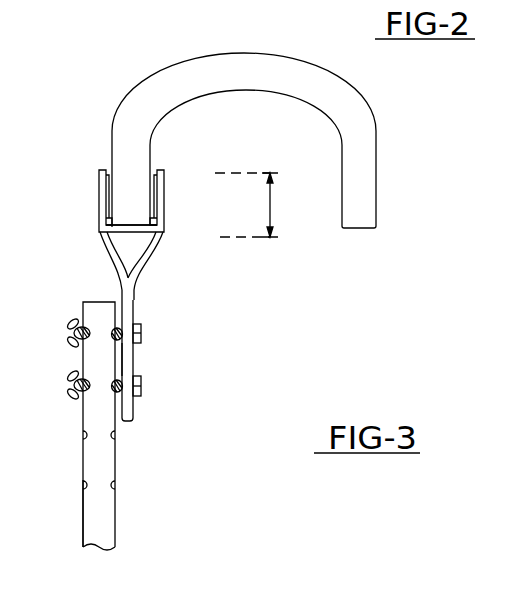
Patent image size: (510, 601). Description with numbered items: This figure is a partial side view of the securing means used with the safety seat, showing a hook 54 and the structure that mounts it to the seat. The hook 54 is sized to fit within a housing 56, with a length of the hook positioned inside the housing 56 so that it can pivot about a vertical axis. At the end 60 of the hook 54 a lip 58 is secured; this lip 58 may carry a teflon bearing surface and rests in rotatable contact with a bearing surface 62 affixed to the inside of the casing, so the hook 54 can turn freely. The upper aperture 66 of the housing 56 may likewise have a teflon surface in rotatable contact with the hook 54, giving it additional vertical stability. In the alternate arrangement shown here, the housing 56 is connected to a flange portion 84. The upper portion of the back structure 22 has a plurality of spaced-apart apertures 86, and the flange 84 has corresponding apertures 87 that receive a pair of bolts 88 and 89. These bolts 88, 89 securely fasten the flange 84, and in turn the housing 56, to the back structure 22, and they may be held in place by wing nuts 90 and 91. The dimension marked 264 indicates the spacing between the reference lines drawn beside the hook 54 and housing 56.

The hook 54 is at (232, 53).
The housing 56 is at (164, 196).
The lip 58 is at (124, 236).
The end of the hook 60 is at (134, 211).
The bearing surface 62 is at (104, 224).
The upper aperture of the housing 66 is at (154, 176).
The flange portion 84 is at (135, 305).
The apertures of the flange 87 is at (133, 349).
The bolt 88 is at (143, 335).
The bolt 89 is at (143, 386).
The wing nut 90 is at (72, 331).
The wing nut 91 is at (70, 383).
The back structure 22 is at (116, 437).
The spaced apart apertures 86 is at (83, 486).
The dimension 264 is at (269, 205).